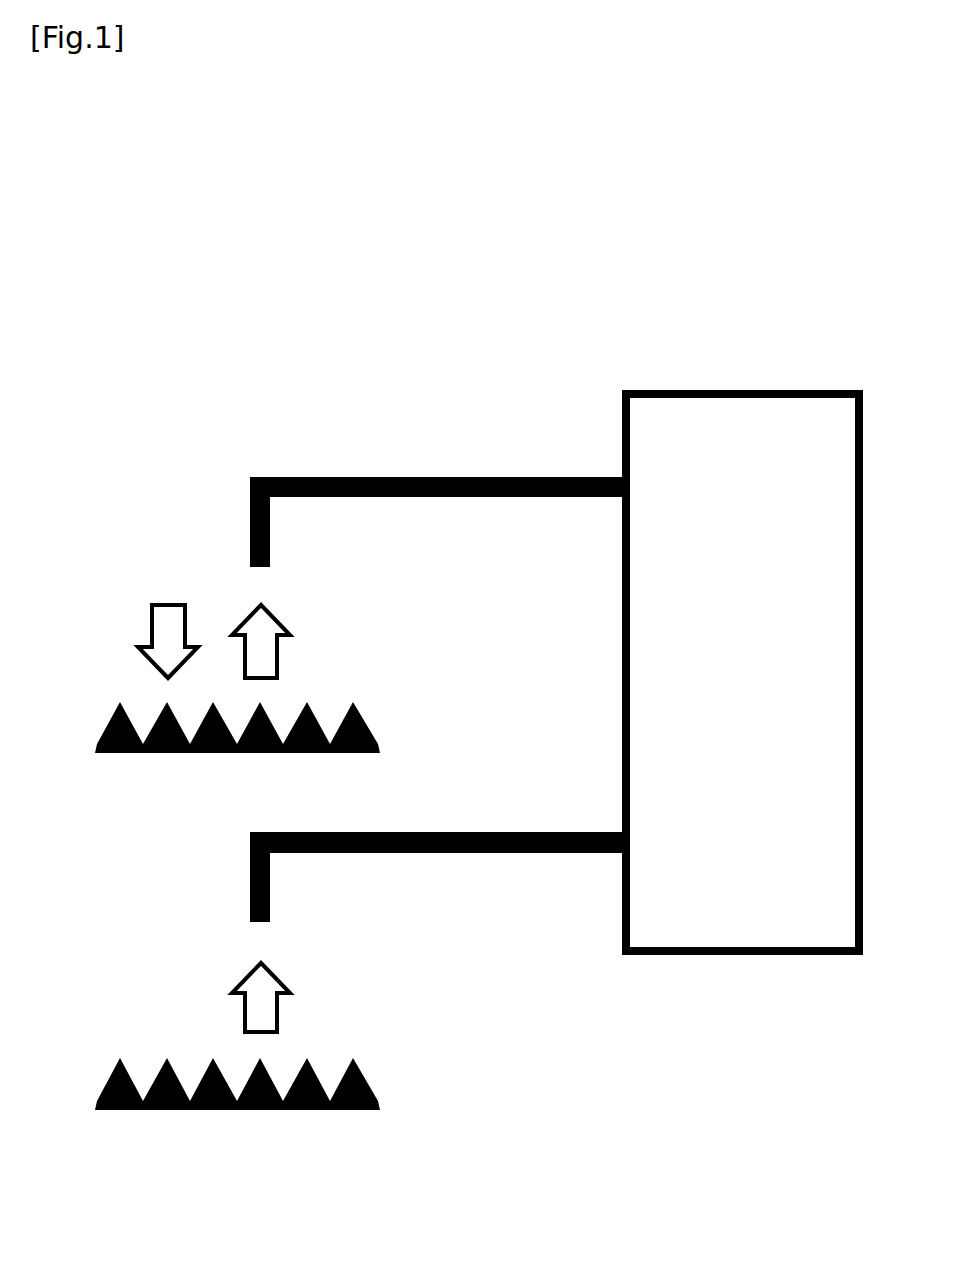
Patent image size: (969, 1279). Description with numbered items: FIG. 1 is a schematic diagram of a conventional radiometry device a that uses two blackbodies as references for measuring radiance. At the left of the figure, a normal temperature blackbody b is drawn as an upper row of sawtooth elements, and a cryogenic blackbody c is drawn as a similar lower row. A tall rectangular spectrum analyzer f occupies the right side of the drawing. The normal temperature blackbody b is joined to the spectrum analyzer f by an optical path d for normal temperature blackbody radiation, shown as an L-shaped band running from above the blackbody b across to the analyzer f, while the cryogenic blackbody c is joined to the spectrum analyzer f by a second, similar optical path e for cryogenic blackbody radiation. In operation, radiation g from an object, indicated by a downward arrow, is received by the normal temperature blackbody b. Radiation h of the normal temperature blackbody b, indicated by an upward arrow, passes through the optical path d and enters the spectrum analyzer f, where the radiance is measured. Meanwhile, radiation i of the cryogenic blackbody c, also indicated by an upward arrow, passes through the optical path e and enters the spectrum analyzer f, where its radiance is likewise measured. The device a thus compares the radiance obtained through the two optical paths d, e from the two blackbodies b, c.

The radiometry device a is at (640, 219).
The normal temperature blackbody b is at (165, 754).
The cryogenic blackbody c is at (206, 1111).
The optical path for normal temperature blackbody radiation d is at (430, 478).
The optical path for cryogenic blackbody radiation e is at (432, 853).
The spectrum analyzer f is at (755, 390).
The radiation from an object g is at (150, 630).
The radiation of the normal temperature blackbody h is at (278, 655).
The radiation of the cryogenic blackbody i is at (243, 1009).